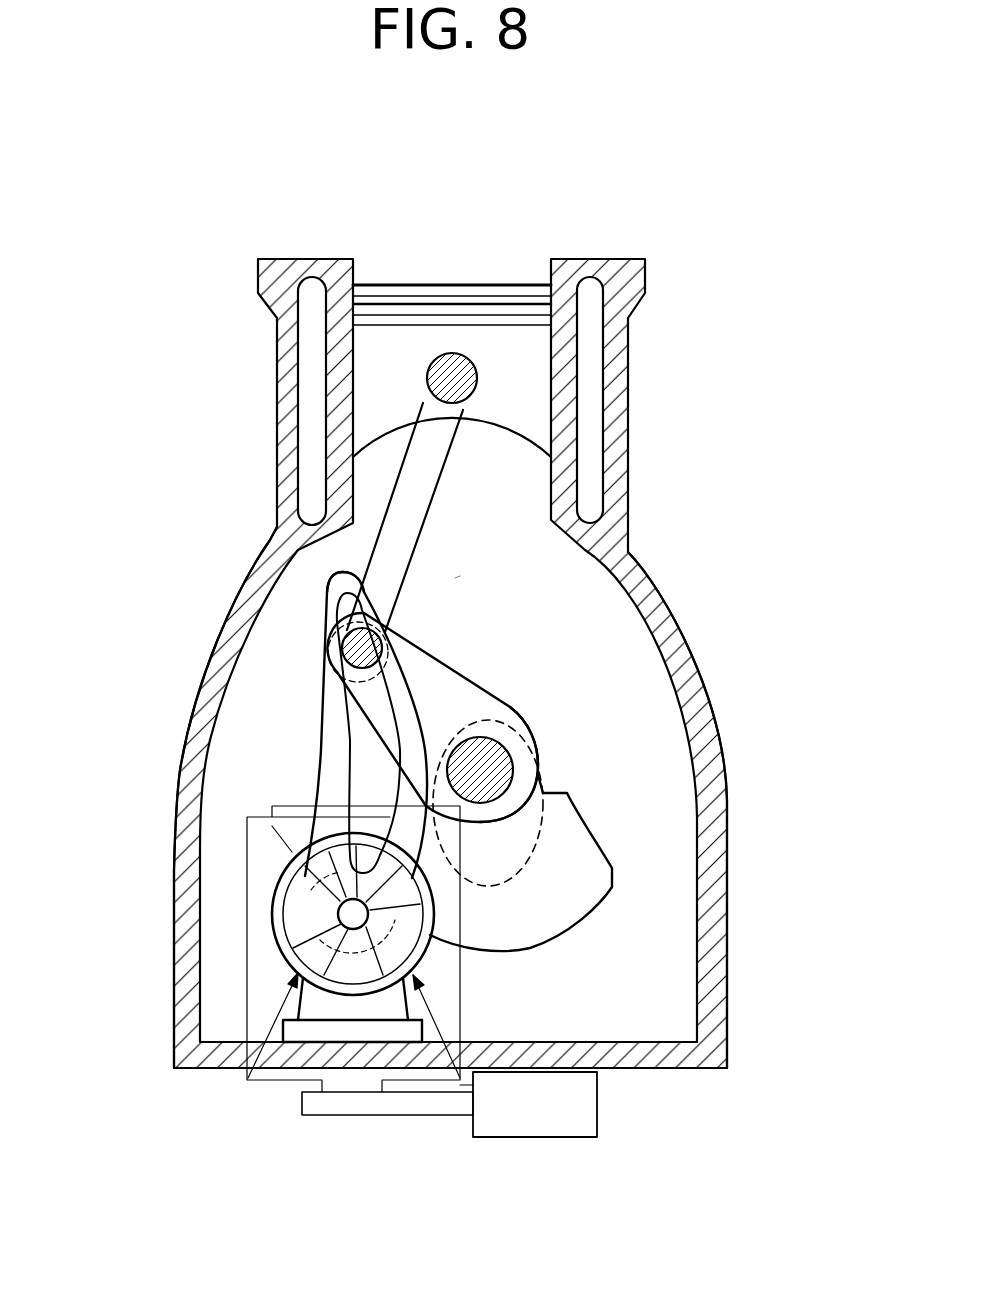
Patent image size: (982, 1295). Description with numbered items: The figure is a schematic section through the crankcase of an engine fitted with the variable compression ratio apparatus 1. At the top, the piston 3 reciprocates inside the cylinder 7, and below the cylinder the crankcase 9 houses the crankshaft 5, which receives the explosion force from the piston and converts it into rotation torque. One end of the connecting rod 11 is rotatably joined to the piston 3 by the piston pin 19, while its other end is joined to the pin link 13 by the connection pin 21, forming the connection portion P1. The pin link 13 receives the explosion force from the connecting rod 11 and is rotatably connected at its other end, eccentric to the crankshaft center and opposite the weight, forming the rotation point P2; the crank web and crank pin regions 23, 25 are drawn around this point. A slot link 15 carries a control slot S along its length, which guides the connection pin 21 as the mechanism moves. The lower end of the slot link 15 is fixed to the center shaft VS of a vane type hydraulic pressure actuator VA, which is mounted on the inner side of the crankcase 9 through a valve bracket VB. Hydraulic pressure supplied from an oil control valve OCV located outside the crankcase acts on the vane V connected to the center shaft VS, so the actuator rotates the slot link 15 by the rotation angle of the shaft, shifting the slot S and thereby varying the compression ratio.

The variable compression ratio apparatus 1 is at (452, 578).
The piston 3 is at (517, 350).
The crankshaft 5 is at (545, 823).
The cylinder 7 is at (565, 393).
The crankcase 9 is at (706, 693).
The connecting rod 11 is at (403, 502).
The pin link 13 is at (457, 695).
The slot link 15 is at (333, 620).
The piston pin 19 is at (450, 352).
The connection pin 21 is at (345, 589).
The crank arm 23 is at (580, 893).
The crank pin 25 is at (533, 743).
The connection portion P1 is at (383, 648).
The rotation point P2 is at (488, 758).
The control slot S is at (363, 743).
The vane V is at (347, 948).
The vane type of hydraulic pressure actuator VA is at (273, 863).
The valve bracket VB is at (323, 1005).
The center shaft VS is at (373, 913).
The oil control valve OCV is at (528, 1104).